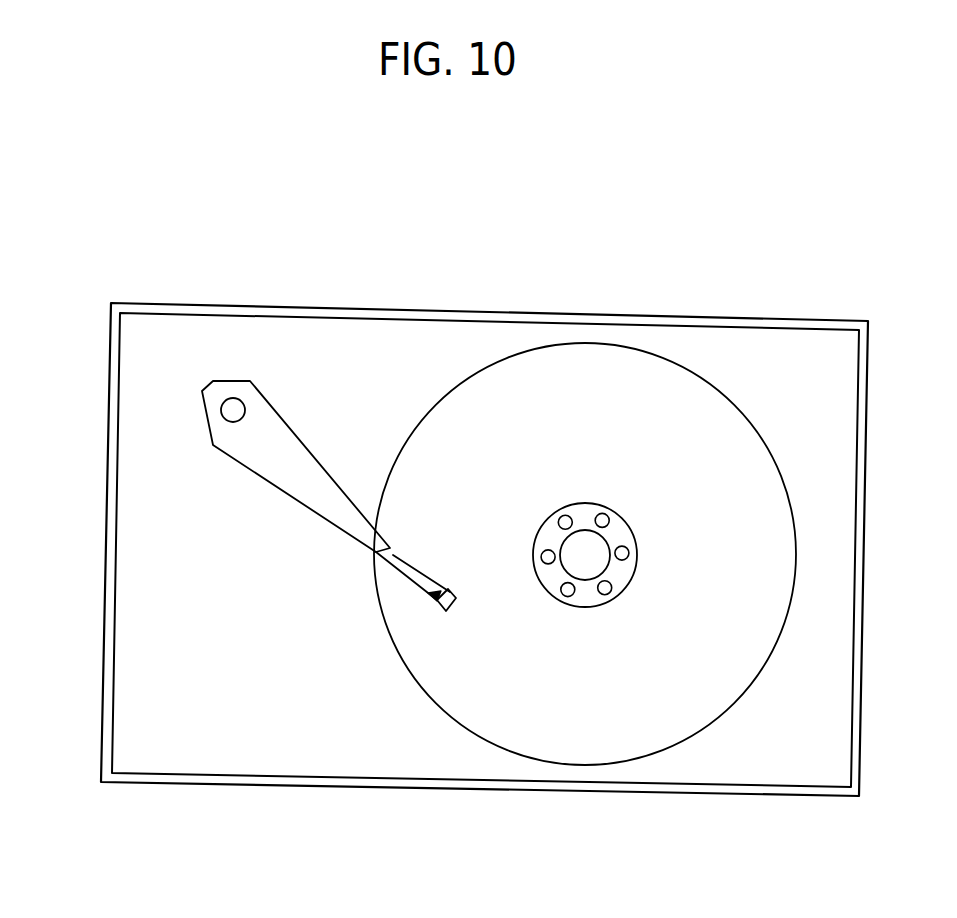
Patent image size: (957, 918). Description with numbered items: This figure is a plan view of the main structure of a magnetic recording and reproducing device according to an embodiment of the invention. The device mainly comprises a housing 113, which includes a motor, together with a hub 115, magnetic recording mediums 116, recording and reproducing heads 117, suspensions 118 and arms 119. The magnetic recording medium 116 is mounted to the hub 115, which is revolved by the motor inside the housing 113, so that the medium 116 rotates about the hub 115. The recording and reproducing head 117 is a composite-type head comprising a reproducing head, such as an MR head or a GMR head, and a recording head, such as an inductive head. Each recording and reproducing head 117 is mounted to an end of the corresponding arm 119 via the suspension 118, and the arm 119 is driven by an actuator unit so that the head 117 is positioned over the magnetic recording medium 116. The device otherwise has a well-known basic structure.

The housing 113 is at (815, 796).
The hub 115 is at (620, 530).
The magnetic recording medium 116 is at (637, 363).
The recording and reproducing head 117 is at (453, 590).
The suspension 118 is at (410, 560).
The arm 119 is at (280, 482).